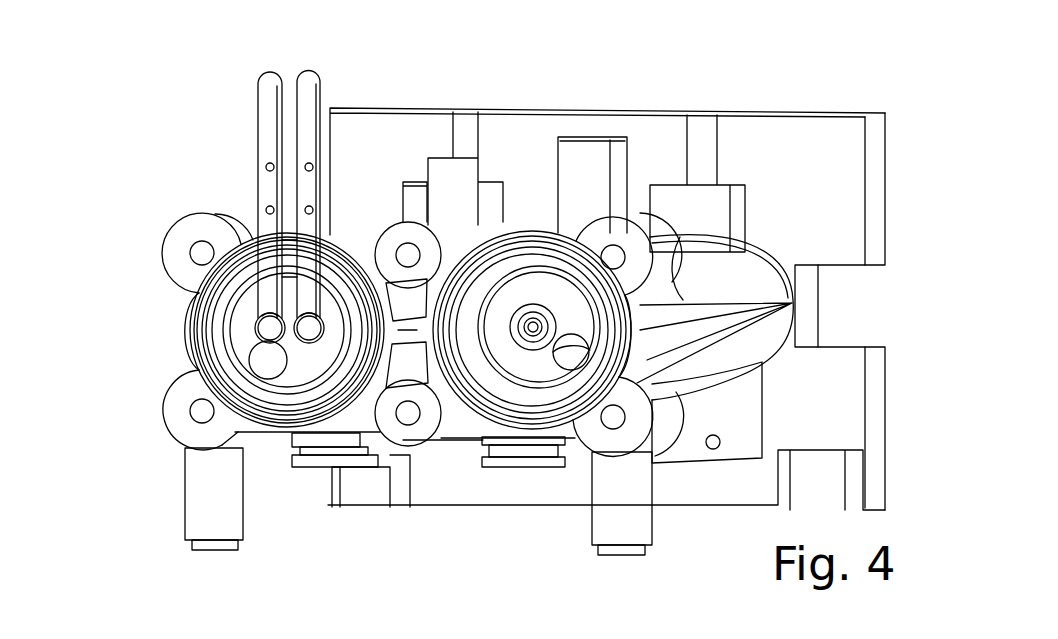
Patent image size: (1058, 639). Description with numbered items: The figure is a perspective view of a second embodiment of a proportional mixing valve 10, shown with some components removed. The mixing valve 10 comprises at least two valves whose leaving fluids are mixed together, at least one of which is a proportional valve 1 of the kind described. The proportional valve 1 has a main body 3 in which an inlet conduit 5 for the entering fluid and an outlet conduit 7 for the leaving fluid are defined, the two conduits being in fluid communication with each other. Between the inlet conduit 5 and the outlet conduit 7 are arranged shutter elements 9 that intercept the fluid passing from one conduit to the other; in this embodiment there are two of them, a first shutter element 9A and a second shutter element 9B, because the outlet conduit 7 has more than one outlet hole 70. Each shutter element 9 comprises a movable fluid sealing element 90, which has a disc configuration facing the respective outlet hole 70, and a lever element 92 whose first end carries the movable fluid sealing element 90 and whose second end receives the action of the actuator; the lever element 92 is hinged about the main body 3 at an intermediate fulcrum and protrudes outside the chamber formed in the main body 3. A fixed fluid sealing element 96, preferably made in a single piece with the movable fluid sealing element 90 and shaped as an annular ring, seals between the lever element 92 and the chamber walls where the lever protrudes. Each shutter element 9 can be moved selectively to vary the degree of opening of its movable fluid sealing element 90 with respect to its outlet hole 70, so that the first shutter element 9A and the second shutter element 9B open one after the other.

The proportional mixing valve 10 is at (366, 54).
The proportional valve 1 is at (172, 210).
The main body 3 is at (800, 216).
The inlet conduit 5 is at (263, 358).
The outlet conduit 7 is at (533, 327).
The outlet hole 70 is at (533, 327).
The shutter element 9 is at (286, 344).
The first shutter element 9A is at (309, 328).
The second shutter element 9B is at (270, 328).
The movable fluid sealing element 90 is at (310, 325).
The lever element 92 is at (305, 97).
The fixed fluid sealing element 96 is at (213, 287).